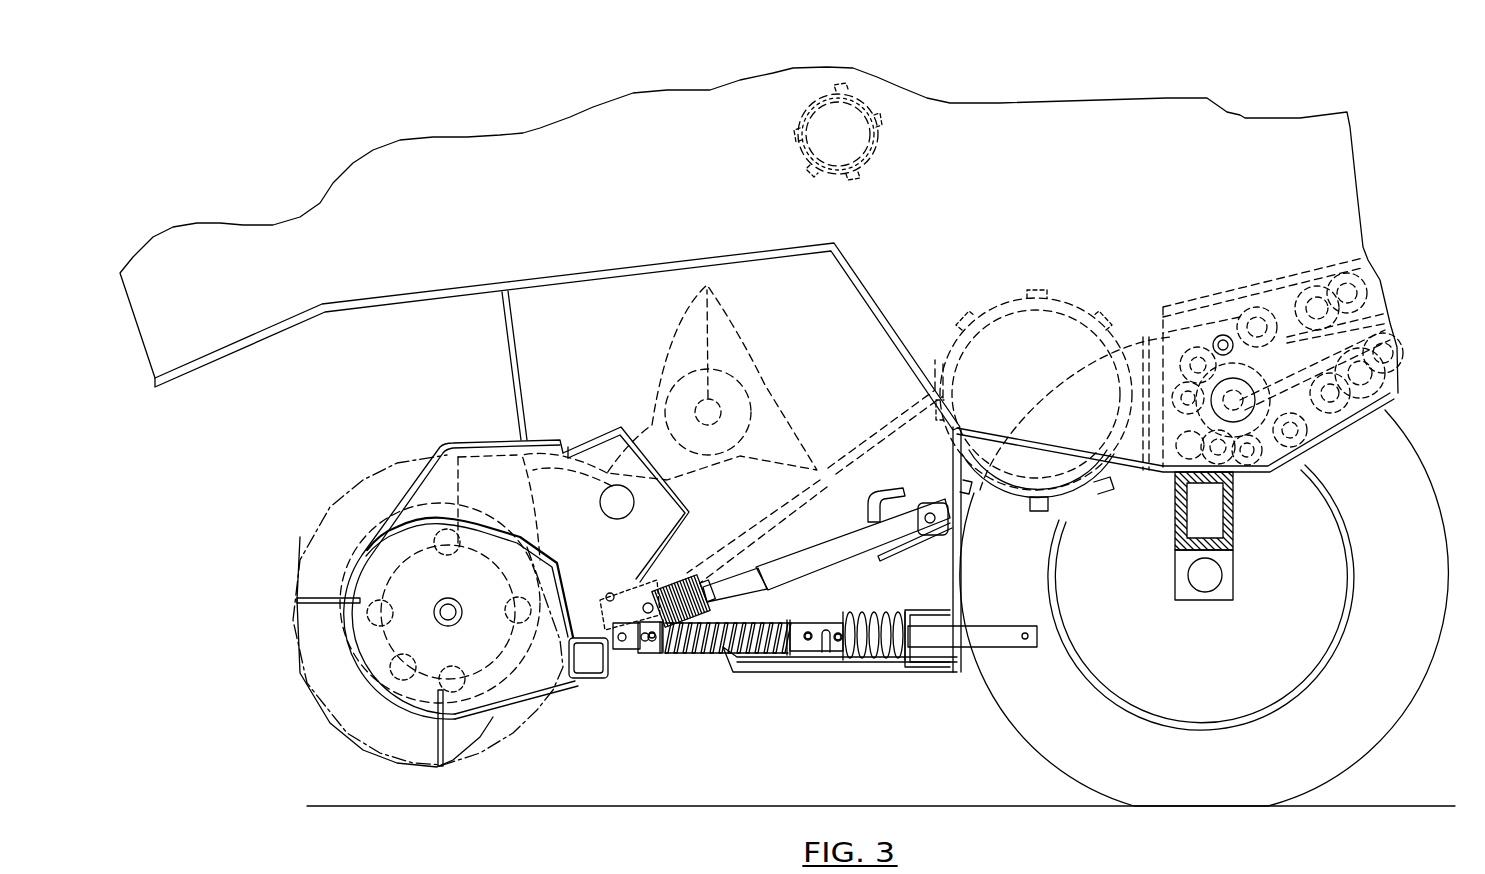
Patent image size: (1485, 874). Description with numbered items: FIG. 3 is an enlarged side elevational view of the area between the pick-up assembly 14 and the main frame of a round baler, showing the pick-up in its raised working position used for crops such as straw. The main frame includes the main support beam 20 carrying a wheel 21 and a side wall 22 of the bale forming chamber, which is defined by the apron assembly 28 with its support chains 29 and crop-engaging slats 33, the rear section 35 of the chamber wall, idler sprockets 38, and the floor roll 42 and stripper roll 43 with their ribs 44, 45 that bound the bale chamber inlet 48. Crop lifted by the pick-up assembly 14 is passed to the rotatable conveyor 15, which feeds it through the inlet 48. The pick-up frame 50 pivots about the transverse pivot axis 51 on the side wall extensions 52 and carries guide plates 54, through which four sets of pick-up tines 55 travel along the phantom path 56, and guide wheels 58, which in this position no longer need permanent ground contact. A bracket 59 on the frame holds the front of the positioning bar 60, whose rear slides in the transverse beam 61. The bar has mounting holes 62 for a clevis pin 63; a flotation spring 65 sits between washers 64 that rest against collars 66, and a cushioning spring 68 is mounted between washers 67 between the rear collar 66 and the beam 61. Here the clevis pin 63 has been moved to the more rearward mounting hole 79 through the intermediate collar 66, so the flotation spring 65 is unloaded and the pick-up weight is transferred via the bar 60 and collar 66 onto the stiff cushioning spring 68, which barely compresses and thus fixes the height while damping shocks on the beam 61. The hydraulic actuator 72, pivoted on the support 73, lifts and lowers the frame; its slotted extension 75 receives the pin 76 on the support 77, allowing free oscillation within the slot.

The pick-up assembly 14 is at (290, 447).
The rotatable conveyor 15 is at (706, 325).
The main support beam 20 is at (1236, 525).
The wheels 21 is at (1400, 478).
The side walls 22 is at (685, 183).
The apron assembly 28 is at (1353, 293).
The support chains 29 is at (1330, 300).
The crop-engaging slats 33 is at (1257, 322).
The rear section of bale chamber wall 35 is at (1377, 318).
The idler sprockets 38 is at (1268, 390).
The floor roll 42 is at (1050, 303).
The stripper roll 43 is at (838, 134).
The ribs 44 is at (1145, 370).
The ribs 45 is at (880, 163).
The bale chamber inlet 48 is at (857, 323).
The pick-up frame 50 is at (584, 660).
The transverse pivot axis 51 is at (605, 500).
The side wall extensions 52 is at (533, 332).
The guide plates 54 is at (365, 545).
The pick-up tines 55 is at (455, 485).
The path 56 is at (320, 520).
The guide wheels 58 is at (303, 675).
The bracket 59 is at (637, 650).
The positioning bar 60 is at (990, 636).
The transverse beam 61 is at (928, 673).
The mounting holes 62 is at (637, 650).
The clevis pin 63 is at (825, 655).
The washers 64 is at (792, 652).
The flotation spring 65 is at (705, 648).
The collars 66 is at (660, 655).
The washers 67 is at (905, 665).
The cushioning spring 68 is at (875, 660).
The hydraulic actuator 72 is at (835, 545).
The support 73 is at (905, 548).
The slotted extension 75 is at (648, 603).
The pin 76 is at (630, 605).
The support 77 is at (612, 592).
The rearward mounting hole 79 is at (838, 634).